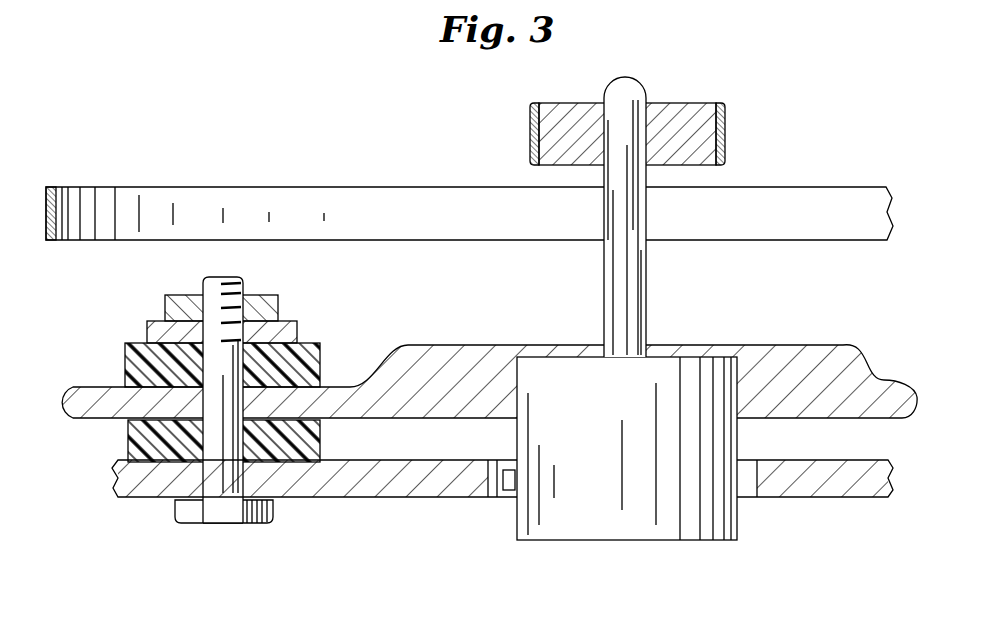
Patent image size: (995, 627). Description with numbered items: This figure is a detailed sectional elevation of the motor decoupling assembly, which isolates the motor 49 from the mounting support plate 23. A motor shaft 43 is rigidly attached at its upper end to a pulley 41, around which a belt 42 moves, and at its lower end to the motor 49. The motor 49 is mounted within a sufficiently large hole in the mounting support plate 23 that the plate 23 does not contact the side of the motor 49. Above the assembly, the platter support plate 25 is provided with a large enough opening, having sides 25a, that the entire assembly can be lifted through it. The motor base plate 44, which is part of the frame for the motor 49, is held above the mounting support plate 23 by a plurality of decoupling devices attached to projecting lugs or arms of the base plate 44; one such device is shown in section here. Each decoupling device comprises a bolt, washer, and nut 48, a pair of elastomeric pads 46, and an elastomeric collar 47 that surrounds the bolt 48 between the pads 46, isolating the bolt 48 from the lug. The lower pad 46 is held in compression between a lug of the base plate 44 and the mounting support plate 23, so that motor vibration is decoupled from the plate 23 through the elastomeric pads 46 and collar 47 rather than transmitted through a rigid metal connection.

The mounting support plate 23 is at (465, 495).
The platter support plate 25 is at (186, 180).
The sides of opening 25a is at (270, 198).
The pulley 41 is at (678, 105).
The belt 42 is at (531, 140).
The motor shaft 43 is at (630, 84).
The motor base plate 44 is at (848, 357).
The elastomeric pads 46 is at (322, 369).
The elastomeric collar 47 is at (244, 395).
The bolt, washer, and nut 48 is at (288, 318).
The motor 49 is at (678, 532).